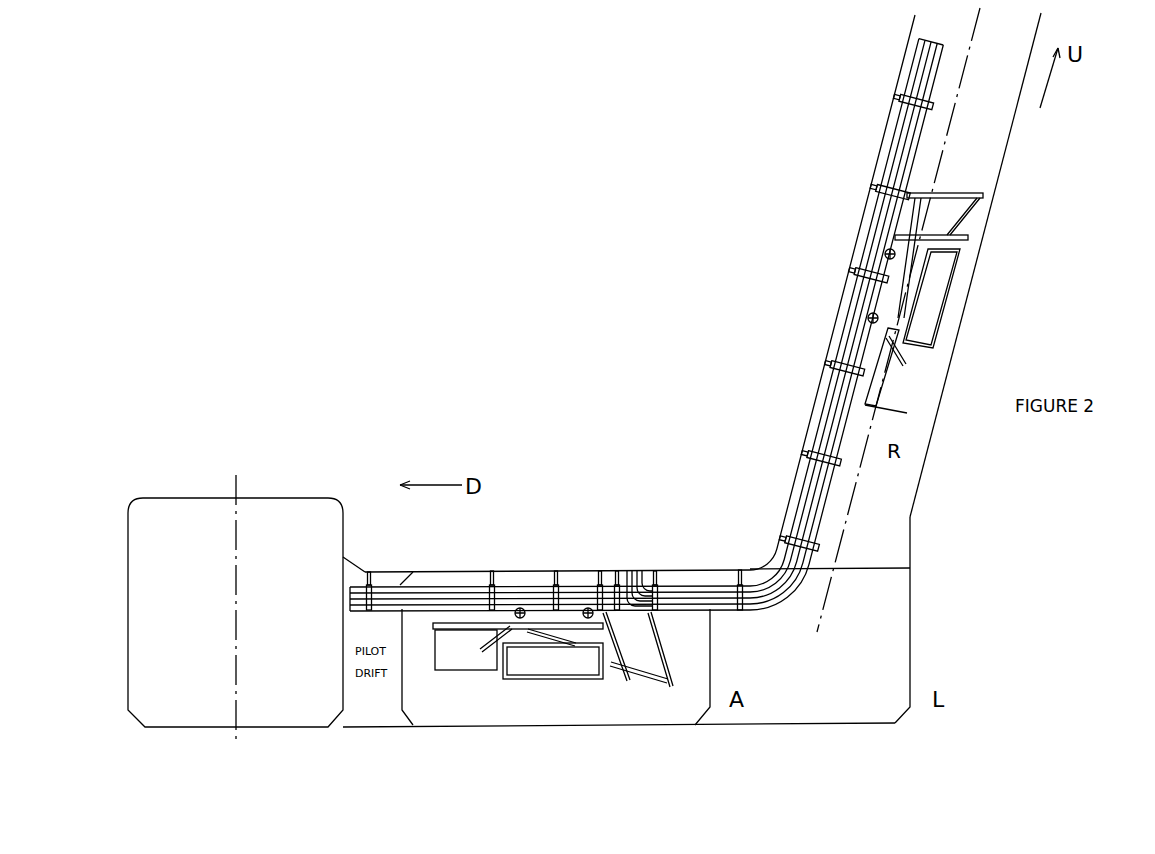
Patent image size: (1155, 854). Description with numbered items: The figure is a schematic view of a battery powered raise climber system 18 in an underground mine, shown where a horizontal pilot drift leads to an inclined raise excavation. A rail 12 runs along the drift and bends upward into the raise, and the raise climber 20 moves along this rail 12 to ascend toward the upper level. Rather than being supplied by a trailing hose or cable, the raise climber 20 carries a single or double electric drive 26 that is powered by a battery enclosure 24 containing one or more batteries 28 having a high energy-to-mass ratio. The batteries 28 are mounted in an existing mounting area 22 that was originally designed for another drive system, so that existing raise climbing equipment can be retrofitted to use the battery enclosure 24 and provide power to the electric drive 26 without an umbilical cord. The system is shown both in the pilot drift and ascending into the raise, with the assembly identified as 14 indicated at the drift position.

The rail 12 is at (808, 530).
The pipe handling assembly 14 is at (464, 717).
The battery powered raise climber system 18 is at (930, 389).
The raise climber 20 is at (547, 682).
The mounting area 22 is at (463, 625).
The battery enclosure 24 is at (435, 658).
The electric drive 26 is at (855, 278).
The batteries 28 is at (457, 663).